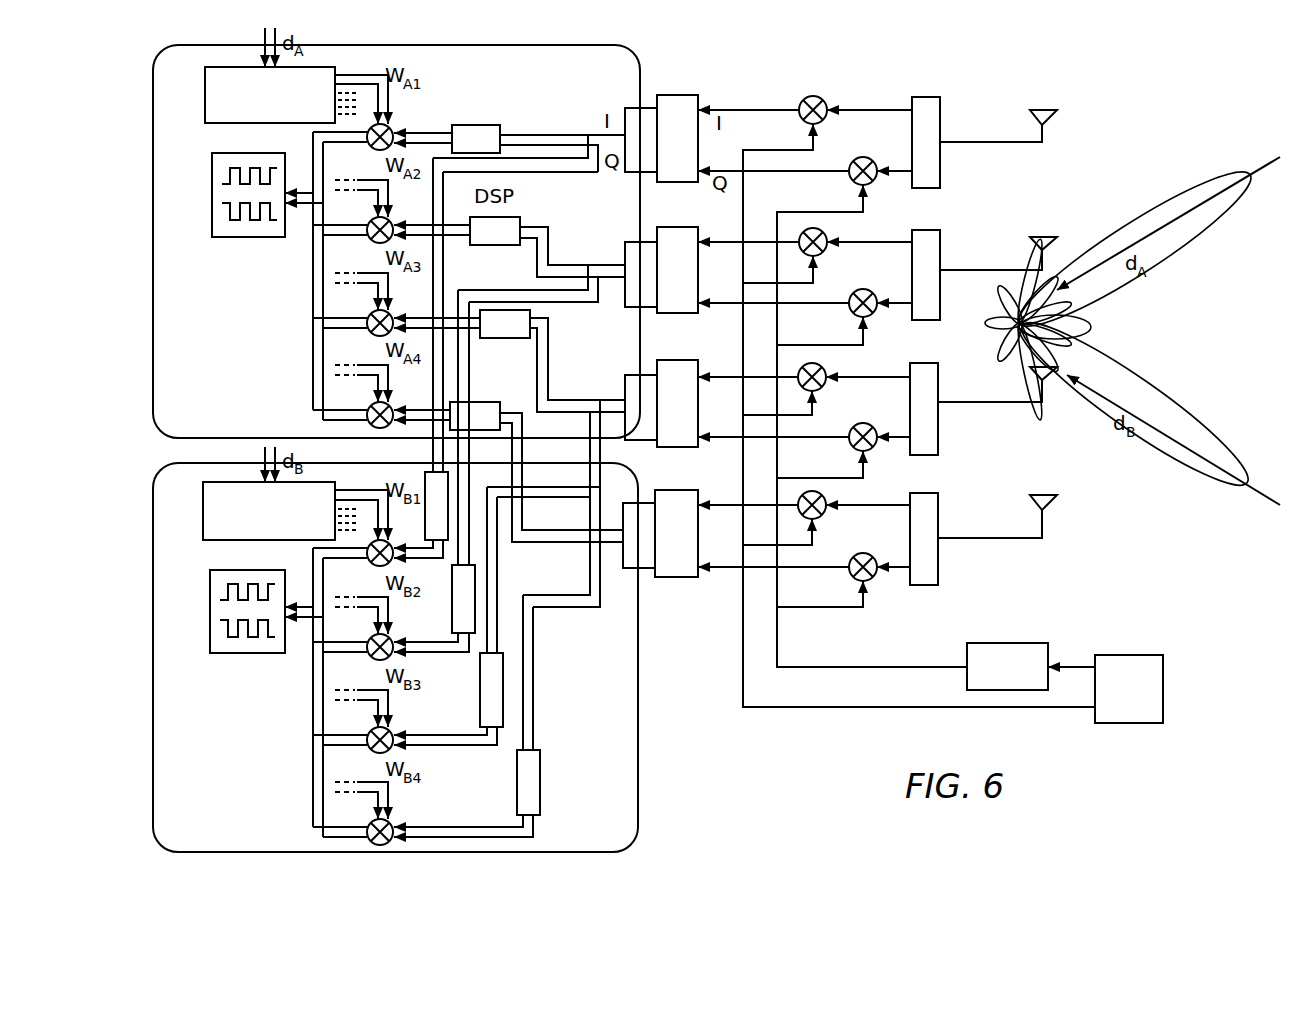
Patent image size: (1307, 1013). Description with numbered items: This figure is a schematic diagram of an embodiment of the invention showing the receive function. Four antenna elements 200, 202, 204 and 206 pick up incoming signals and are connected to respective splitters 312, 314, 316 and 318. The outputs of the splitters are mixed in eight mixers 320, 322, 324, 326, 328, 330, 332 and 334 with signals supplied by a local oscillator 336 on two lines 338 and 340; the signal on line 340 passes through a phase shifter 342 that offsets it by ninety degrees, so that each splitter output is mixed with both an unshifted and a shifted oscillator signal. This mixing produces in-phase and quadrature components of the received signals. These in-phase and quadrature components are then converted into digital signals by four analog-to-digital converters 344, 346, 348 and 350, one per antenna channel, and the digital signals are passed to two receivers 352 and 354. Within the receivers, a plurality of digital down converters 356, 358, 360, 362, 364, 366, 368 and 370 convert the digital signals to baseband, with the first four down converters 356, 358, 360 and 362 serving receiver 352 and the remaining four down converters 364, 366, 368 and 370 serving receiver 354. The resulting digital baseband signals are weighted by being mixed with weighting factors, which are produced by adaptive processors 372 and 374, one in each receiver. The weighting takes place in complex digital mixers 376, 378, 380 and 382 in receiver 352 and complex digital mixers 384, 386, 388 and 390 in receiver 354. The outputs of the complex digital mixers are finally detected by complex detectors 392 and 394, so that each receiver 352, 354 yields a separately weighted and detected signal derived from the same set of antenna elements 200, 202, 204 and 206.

The antenna element 200 is at (1057, 118).
The antenna element 202 is at (1062, 237).
The antenna element 204 is at (1057, 370).
The antenna element 206 is at (1057, 503).
The splitter 312 is at (940, 175).
The splitter 314 is at (940, 250).
The splitter 316 is at (938, 432).
The splitter 318 is at (938, 565).
The mixer 320 is at (827, 118).
The mixer 322 is at (875, 182).
The mixer 324 is at (827, 250).
The mixer 326 is at (875, 314).
The mixer 328 is at (826, 385).
The mixer 330 is at (875, 448).
The mixer 332 is at (826, 513).
The mixer 334 is at (875, 578).
The local oscillator 336 is at (1133, 655).
The line 338 is at (910, 707).
The line 340 is at (810, 667).
The phase shifter 342 is at (1005, 643).
The analog-to-digital converter 344 is at (667, 182).
The analog-to-digital converter 346 is at (667, 313).
The analog-to-digital converter 348 is at (667, 447).
The analog-to-digital converter 350 is at (667, 577).
The receiver 352 is at (637, 58).
The receiver 354 is at (637, 830).
The digital down converter 356 is at (472, 125).
The digital down converter 358 is at (478, 245).
The digital down converter 360 is at (486, 338).
The digital down converter 362 is at (478, 402).
The digital down converter 364 is at (425, 534).
The digital down converter 366 is at (452, 612).
The digital down converter 368 is at (480, 705).
The digital down converter 370 is at (538, 790).
The adaptive processor 372 is at (206, 112).
The adaptive processor 374 is at (203, 515).
The complex digital mixer 376 is at (374, 150).
The complex digital mixer 378 is at (374, 243).
The complex digital mixer 380 is at (374, 336).
The complex digital mixer 382 is at (390, 404).
The complex digital mixer 384 is at (374, 566).
The complex digital mixer 386 is at (374, 660).
The complex digital mixer 388 is at (374, 753).
The complex digital mixer 390 is at (390, 818).
The complex detector 392 is at (214, 205).
The complex detector 394 is at (210, 606).